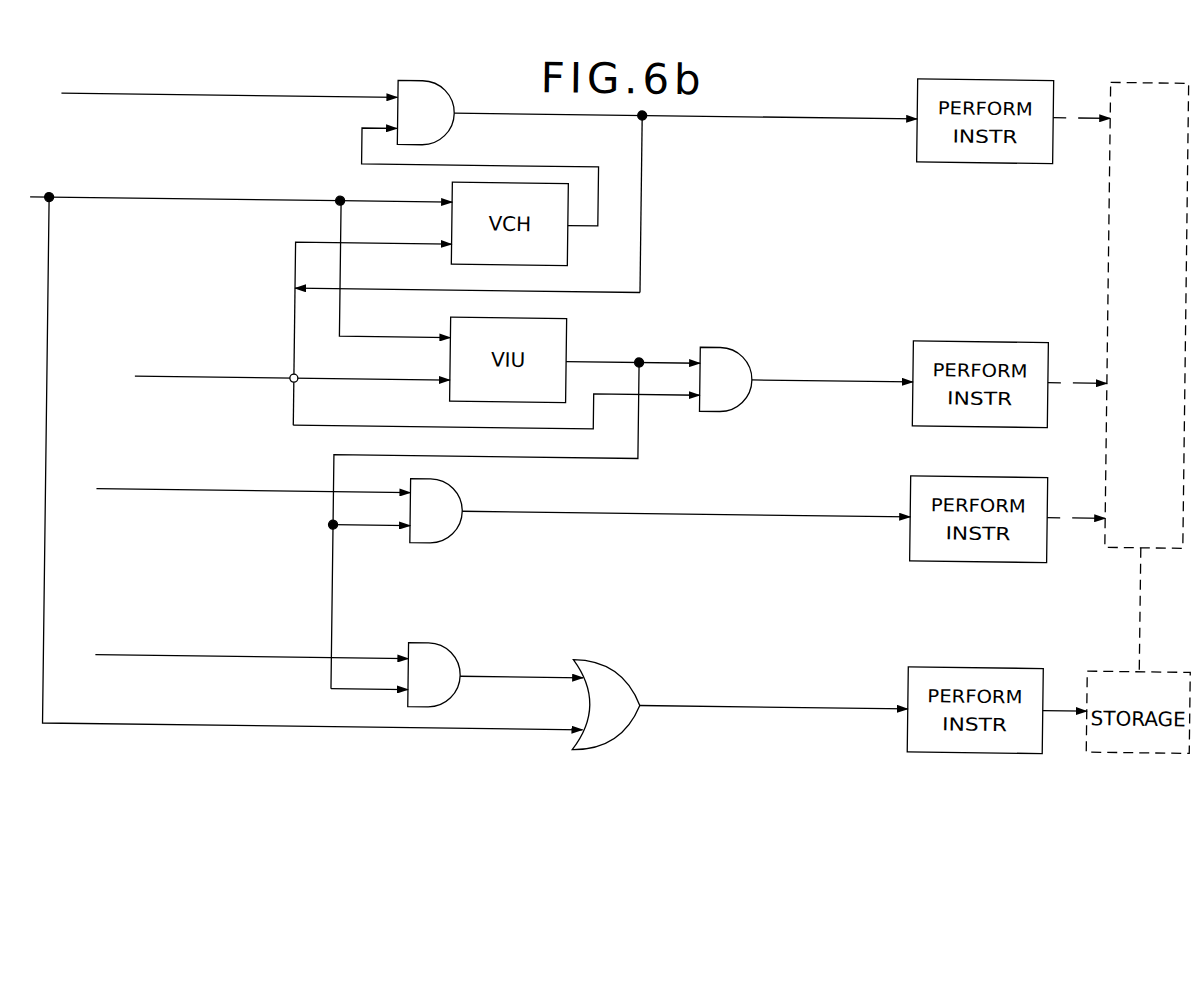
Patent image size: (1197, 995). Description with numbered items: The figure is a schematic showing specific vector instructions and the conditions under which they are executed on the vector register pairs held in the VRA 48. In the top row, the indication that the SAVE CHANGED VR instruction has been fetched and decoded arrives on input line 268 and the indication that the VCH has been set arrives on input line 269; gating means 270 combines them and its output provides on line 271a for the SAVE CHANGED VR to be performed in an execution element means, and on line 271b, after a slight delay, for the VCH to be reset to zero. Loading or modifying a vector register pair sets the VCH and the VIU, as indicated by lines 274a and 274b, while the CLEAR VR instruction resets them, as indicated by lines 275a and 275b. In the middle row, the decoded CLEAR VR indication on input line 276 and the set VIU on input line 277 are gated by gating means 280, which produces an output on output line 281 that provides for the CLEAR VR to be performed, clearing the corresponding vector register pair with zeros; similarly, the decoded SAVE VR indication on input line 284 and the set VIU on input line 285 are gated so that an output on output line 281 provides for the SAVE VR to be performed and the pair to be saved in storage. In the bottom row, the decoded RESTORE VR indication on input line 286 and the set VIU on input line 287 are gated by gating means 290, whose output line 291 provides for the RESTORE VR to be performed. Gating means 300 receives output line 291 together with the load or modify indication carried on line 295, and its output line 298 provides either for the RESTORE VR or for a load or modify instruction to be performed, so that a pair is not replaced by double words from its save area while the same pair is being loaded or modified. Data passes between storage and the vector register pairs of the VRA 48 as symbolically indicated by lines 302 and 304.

The input line 268 is at (144, 100).
The input line 269 is at (354, 152).
The gating means 270 is at (423, 132).
The line 271a is at (774, 120).
The line 271b is at (639, 205).
The line 274a is at (287, 201).
The line 274b is at (338, 271).
The line 275a is at (214, 382).
The line 275b is at (293, 312).
The input line 276 is at (334, 433).
The input line 277 is at (659, 361).
The gating means 280 is at (739, 363).
The output line 281 is at (842, 380).
The input line 284 is at (237, 496).
The input line 285 is at (369, 530).
The input line 286 is at (205, 662).
The input line 287 is at (335, 692).
The gating means 290 is at (448, 685).
The output line 291 is at (488, 678).
The line 295 is at (46, 529).
The output line 298 is at (795, 705).
The gating means 300 is at (608, 728).
The line 302 is at (1056, 707).
The line 304 is at (1142, 606).
The vector register array (VRA) 48 is at (1117, 315).